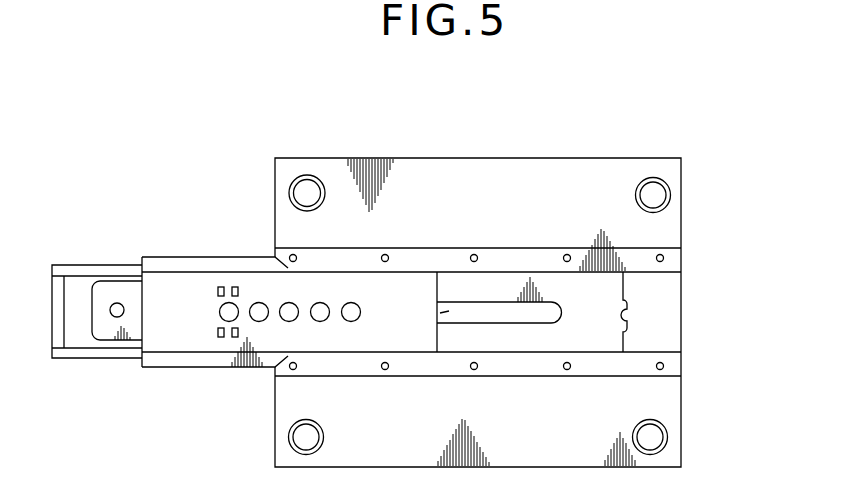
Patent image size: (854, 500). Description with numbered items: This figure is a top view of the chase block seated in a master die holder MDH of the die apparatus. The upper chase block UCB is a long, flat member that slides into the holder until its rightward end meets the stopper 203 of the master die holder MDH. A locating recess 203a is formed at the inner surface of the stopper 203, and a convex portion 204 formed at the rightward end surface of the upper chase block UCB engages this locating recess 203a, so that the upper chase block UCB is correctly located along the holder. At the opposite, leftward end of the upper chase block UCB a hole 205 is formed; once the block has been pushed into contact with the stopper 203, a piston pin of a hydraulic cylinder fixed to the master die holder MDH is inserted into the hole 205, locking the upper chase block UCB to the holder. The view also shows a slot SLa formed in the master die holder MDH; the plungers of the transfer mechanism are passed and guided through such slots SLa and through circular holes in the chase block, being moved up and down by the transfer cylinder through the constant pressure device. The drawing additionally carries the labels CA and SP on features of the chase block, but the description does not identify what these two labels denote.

The hole 205 is at (115, 305).
The contact array CA is at (219, 286).
The spring pins SP is at (236, 308).
The upper chase block UCB is at (185, 342).
The master die holder MDH is at (413, 165).
The convex portion 204 is at (441, 313).
The slot SLa is at (548, 312).
The stopper 203 is at (668, 293).
The locating recess 203a is at (628, 325).